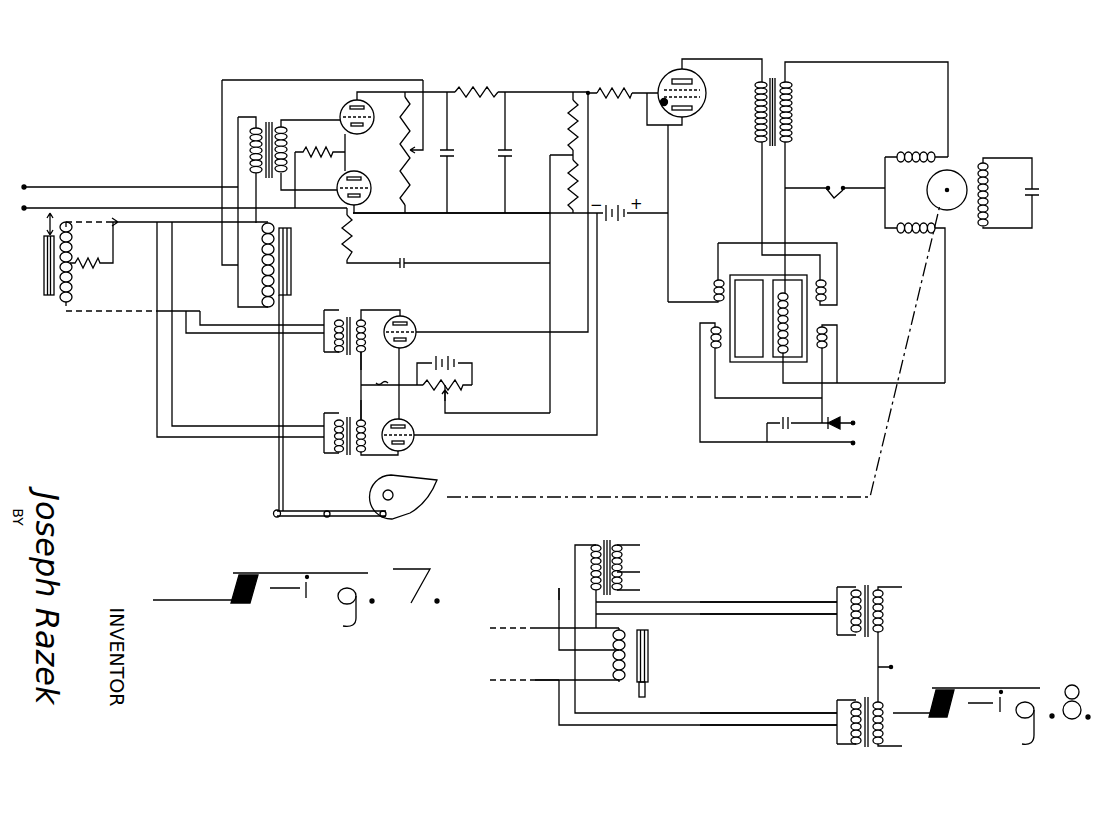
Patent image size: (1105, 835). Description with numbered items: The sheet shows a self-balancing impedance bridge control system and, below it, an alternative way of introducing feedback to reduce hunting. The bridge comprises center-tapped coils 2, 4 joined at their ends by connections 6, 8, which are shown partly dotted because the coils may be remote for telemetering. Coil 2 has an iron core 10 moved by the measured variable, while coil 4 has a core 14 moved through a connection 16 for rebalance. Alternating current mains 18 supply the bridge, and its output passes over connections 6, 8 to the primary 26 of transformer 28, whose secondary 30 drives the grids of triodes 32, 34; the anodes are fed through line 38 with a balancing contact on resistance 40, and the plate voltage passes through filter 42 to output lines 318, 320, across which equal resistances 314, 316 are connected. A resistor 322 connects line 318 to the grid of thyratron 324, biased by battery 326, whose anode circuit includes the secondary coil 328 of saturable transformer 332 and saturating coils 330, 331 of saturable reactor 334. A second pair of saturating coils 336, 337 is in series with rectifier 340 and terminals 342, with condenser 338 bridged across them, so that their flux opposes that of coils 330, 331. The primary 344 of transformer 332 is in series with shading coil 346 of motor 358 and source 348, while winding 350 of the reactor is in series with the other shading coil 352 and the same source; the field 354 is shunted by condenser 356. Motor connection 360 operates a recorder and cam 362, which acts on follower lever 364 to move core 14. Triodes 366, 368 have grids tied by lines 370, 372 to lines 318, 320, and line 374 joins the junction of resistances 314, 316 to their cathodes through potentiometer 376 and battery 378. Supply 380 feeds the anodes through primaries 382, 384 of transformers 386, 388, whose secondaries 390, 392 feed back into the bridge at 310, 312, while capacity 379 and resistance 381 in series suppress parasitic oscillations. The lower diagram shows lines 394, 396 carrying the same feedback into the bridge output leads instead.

In FIG. 7, the coil 2 is at (67, 287).
In FIG. 7, the coil 4 is at (262, 272).
In FIG. 8, the coil 4 is at (613, 660).
In FIG. 7, the connection 6 is at (153, 222).
In FIG. 8, the connection 6 is at (540, 630).
In FIG. 7, the connection 8 is at (140, 311).
In FIG. 8, the connection 8 is at (540, 680).
In FIG. 7, the iron core 10 is at (44, 270).
In FIG. 7, the core 14 is at (292, 266).
In FIG. 8, the core 14 is at (648, 663).
In FIG. 7, the connection 16 is at (279, 385).
In FIG. 7, the mains 18 is at (70, 207).
In FIG. 7, the primary 26 is at (250, 152).
In FIG. 8, the primary 26 is at (591, 562).
In FIG. 7, the transformer 28 is at (271, 115).
In FIG. 8, the transformer 28 is at (608, 539).
In FIG. 7, the transformer secondary 30 is at (292, 151).
In FIG. 7, the triode 32 is at (359, 134).
In FIG. 7, the triode 34 is at (361, 174).
In FIG. 7, the line 38 is at (318, 80).
In FIG. 8, the line 38 is at (558, 603).
In FIG. 7, the resistance 40 is at (410, 166).
In FIG. 7, the filter system 42 is at (479, 198).
In FIG. 7, the feed-back connection 310 is at (152, 392).
In FIG. 7, the feed-back connection 312 is at (228, 336).
In FIG. 7, the resistance 314 is at (575, 128).
In FIG. 7, the resistance 316 is at (576, 186).
In FIG. 7, the output line 318 is at (586, 93).
In FIG. 7, the output line 320 is at (518, 216).
In FIG. 7, the resistor 322 is at (607, 90).
In FIG. 7, the thyratron 324 is at (683, 124).
In FIG. 7, the battery 326 is at (624, 220).
In FIG. 7, the secondary coil 328 is at (758, 131).
In FIG. 7, the saturating coil 330 is at (823, 281).
In FIG. 7, the saturating coil 331 is at (713, 291).
In FIG. 7, the saturable transformer 332 is at (777, 63).
In FIG. 7, the saturable reactor 334 is at (811, 312).
In FIG. 7, the saturating coil 336 is at (830, 344).
In FIG. 7, the saturating coil 337 is at (713, 340).
In FIG. 7, the condenser 338 is at (793, 428).
In FIG. 7, the rectifier 340 is at (832, 420).
In FIG. 7, the terminals 342 is at (852, 428).
In FIG. 7, the primary 344 is at (793, 111).
In FIG. 7, the shading coil 346 is at (915, 154).
In FIG. 7, the alternating current source 348 is at (835, 197).
In FIG. 7, the winding 350 is at (788, 318).
In FIG. 7, the shading coil 352 is at (912, 231).
In FIG. 7, the field 354 is at (980, 220).
In FIG. 7, the condenser 356 is at (1034, 186).
In FIG. 7, the motor 358 is at (953, 171).
In FIG. 7, the motor connection 360 is at (688, 498).
In FIG. 8, the motor connection 360 is at (683, 500).
In FIG. 7, the cam 362 is at (410, 512).
In FIG. 7, the follower lever 364 is at (320, 520).
In FIG. 7, the triode 366 is at (413, 323).
In FIG. 7, the triode 368 is at (414, 440).
In FIG. 7, the line 370 is at (498, 331).
In FIG. 7, the line 372 is at (520, 437).
In FIG. 7, the line 374 is at (488, 413).
In FIG. 7, the potentiometer 376 is at (434, 391).
In FIG. 7, the battery 378 is at (460, 363).
In FIG. 7, the capacity 379 is at (405, 266).
In FIG. 7, the alternating current supply 380 is at (380, 392).
In FIG. 7, the resistance 381 is at (352, 235).
In FIG. 7, the primary 382 is at (360, 353).
In FIG. 7, the primary 384 is at (360, 420).
In FIG. 7, the transformer 386 is at (354, 311).
In FIG. 8, the transformer 386 is at (872, 583).
In FIG. 7, the transformer 388 is at (352, 462).
In FIG. 8, the transformer 388 is at (866, 751).
In FIG. 7, the secondary 390 is at (337, 320).
In FIG. 8, the secondary 390 is at (853, 601).
In FIG. 7, the secondary 392 is at (337, 452).
In FIG. 8, the secondary 392 is at (852, 733).
In FIG. 8, the line 394 is at (714, 613).
In FIG. 8, the line 396 is at (713, 725).